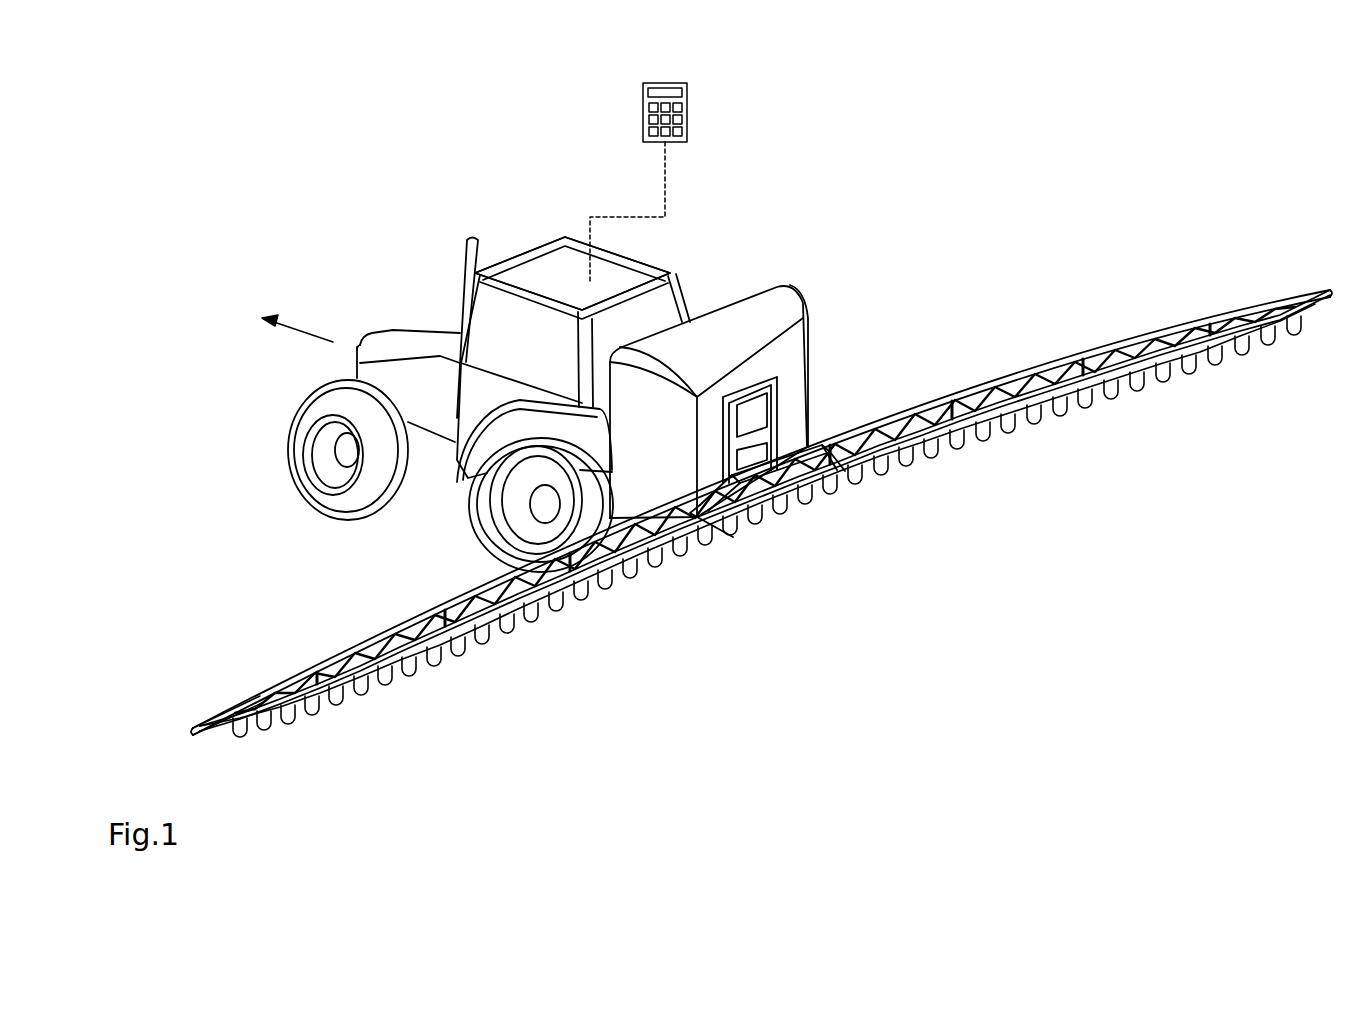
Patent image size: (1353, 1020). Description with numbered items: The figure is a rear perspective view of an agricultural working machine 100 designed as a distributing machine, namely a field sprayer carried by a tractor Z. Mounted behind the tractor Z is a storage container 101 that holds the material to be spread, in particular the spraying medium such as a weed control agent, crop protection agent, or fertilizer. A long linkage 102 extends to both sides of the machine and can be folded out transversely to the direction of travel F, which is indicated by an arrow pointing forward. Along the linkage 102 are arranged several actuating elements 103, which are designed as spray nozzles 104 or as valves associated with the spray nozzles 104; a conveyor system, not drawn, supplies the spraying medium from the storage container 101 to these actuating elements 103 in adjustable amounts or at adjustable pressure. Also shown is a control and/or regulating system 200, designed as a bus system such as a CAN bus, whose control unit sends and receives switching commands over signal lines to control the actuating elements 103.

The agricultural working machine 100 is at (770, 211).
The storage container 101 is at (783, 312).
The linkage 102 is at (726, 528).
The actuating elements 103 is at (220, 747).
The spray nozzles 104 is at (241, 732).
The control and/or regulating system 200 is at (687, 112).
The tractor Z is at (548, 270).
The direction of travel F is at (312, 330).